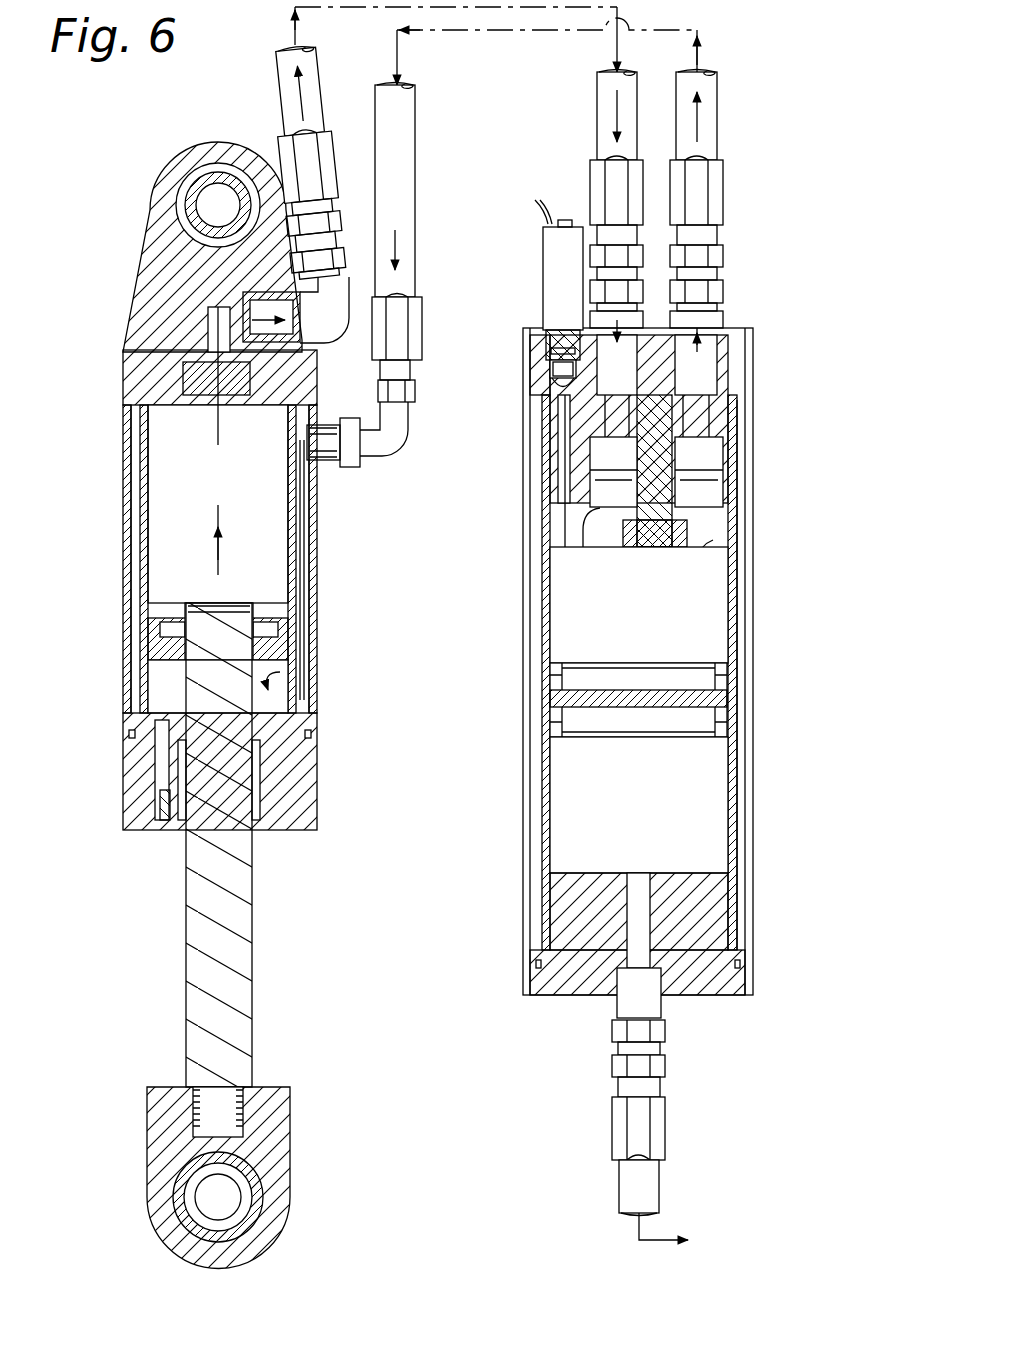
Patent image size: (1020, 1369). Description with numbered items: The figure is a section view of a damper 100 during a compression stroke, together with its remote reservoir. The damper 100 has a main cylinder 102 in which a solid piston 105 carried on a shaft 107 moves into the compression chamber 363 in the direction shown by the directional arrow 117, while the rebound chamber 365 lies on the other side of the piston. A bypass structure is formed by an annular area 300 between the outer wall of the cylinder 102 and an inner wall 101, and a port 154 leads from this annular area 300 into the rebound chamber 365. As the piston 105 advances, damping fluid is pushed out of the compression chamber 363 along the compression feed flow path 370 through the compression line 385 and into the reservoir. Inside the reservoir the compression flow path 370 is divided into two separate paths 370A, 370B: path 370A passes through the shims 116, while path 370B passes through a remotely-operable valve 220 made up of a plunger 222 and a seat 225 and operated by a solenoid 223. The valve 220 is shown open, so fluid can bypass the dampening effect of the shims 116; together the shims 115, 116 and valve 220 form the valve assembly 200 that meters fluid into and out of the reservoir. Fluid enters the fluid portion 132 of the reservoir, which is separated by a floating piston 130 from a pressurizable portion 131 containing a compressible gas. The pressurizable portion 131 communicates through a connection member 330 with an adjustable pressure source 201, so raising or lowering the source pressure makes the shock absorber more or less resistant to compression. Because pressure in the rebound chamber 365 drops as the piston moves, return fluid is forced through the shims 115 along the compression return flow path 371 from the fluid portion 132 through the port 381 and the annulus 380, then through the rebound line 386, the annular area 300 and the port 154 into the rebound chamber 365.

The damper 100 is at (125, 133).
The inner wall 101 is at (145, 583).
The main cylinder 102 is at (318, 740).
The piston 105 is at (222, 615).
The shaft 107 is at (253, 985).
The shims 115 is at (722, 460).
The shims 116 is at (600, 510).
The directional arrow 117 is at (214, 553).
The floating piston 130 is at (625, 700).
The pressurizable portion 131 is at (700, 826).
The fluid portion 132 is at (695, 636).
The port 154 is at (278, 670).
The valve assembly 200 is at (758, 327).
The adjustable pressure source 201 is at (775, 1246).
The remotely-operable valve 220 is at (560, 372).
The plunger 222 is at (555, 355).
The solenoid 223 is at (543, 278).
The seat 225 is at (555, 388).
The annular area 300 is at (135, 508).
The connection member 330 is at (619, 1190).
The compression chamber 363 is at (168, 458).
The rebound chamber 365 is at (165, 692).
The compression feed flow path 370 is at (218, 428).
The first compression flow path 370A is at (580, 582).
The second compression flow path 370B is at (560, 535).
The compression return flow path 371 is at (305, 582).
The annulus 380 is at (538, 775).
The port 381 is at (735, 548).
The compression line 385 is at (278, 66).
The rebound line 386 is at (417, 165).